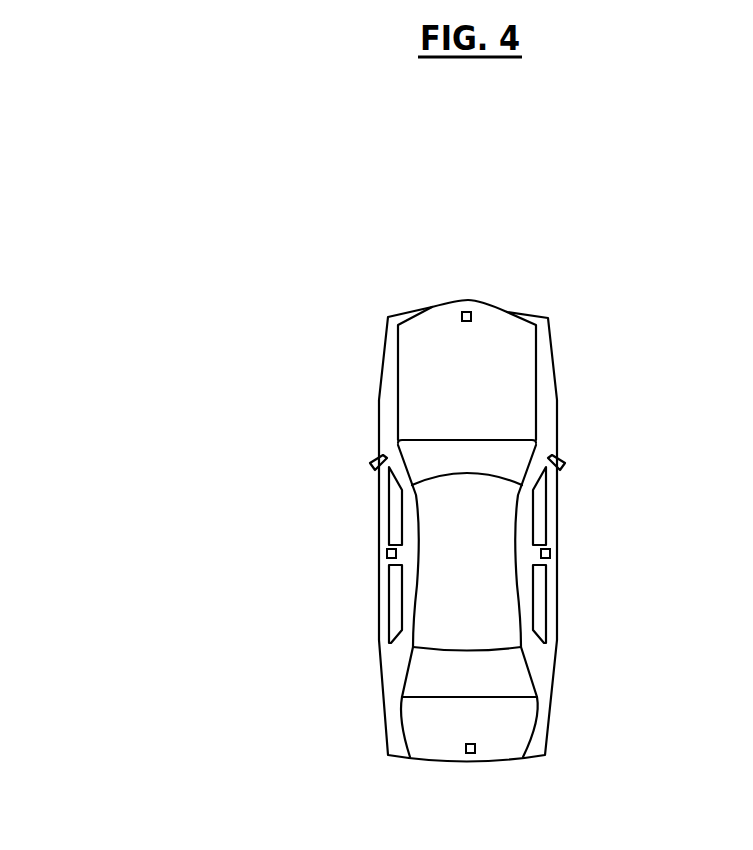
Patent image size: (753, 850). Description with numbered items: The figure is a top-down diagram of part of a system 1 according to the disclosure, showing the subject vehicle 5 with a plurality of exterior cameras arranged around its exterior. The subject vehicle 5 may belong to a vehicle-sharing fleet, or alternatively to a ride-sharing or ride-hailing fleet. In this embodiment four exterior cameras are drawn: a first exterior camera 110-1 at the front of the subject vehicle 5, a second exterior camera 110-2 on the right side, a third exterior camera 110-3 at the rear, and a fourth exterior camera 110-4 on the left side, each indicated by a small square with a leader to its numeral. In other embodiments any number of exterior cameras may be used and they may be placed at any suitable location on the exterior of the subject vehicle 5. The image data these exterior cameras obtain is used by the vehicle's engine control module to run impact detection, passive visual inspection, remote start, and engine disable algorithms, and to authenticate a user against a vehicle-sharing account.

The system 1 is at (150, 285).
The subject vehicle 5 is at (383, 344).
The exterior camera 110-1 is at (470, 311).
The exterior camera 110-2 is at (550, 553).
The exterior camera 110-3 is at (470, 753).
The exterior camera 110-4 is at (387, 553).